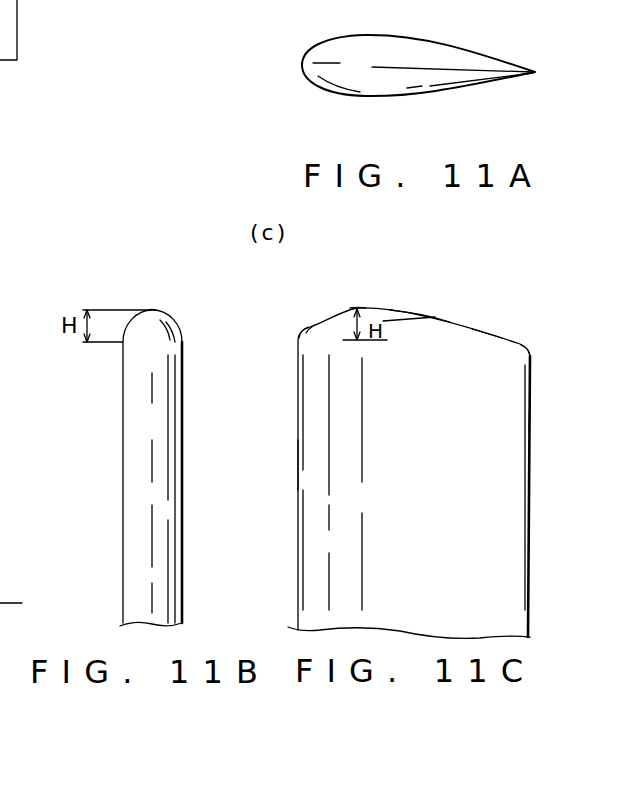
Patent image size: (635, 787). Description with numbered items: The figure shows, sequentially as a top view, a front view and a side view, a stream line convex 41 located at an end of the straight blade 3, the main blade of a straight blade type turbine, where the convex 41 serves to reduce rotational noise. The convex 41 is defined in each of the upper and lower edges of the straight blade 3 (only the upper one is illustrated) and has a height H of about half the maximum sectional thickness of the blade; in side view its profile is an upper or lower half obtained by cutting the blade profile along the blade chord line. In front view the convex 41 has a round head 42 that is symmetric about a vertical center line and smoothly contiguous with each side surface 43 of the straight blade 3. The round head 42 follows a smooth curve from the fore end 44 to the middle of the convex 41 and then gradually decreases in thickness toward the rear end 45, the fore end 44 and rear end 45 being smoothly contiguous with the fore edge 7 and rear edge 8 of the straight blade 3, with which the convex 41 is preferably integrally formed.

In FIG. 11C, the straight blade 3 is at (537, 533).
In FIG. 11C, the fore edge 7 is at (300, 465).
In FIG. 11C, the rear edge 8 is at (533, 413).
In FIG. 11A, the stream line convex 41 is at (378, 87).
In FIG. 11B, the stream line convex 41 is at (165, 322).
In FIG. 11C, the stream line convex 41 is at (400, 327).
In FIG. 11B, the round head 42 is at (152, 310).
In FIG. 11C, the round head 42 is at (342, 308).
In FIG. 11B, the side surface 43 is at (124, 498).
In FIG. 11C, the side surface 43 is at (500, 473).
In FIG. 11C, the fore end 44 is at (298, 328).
In FIG. 11C, the rear end 45 is at (532, 353).